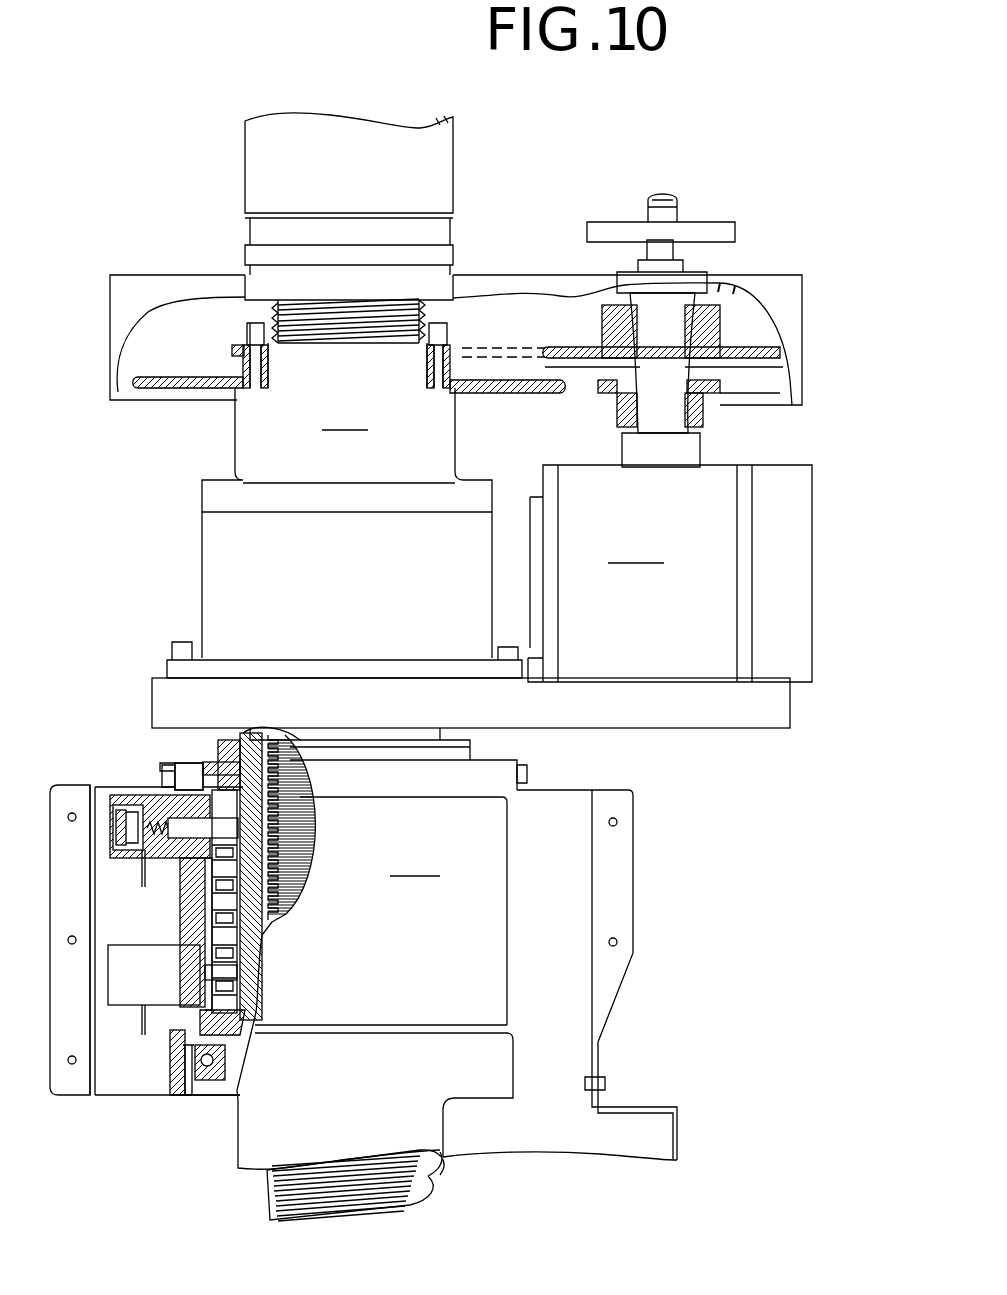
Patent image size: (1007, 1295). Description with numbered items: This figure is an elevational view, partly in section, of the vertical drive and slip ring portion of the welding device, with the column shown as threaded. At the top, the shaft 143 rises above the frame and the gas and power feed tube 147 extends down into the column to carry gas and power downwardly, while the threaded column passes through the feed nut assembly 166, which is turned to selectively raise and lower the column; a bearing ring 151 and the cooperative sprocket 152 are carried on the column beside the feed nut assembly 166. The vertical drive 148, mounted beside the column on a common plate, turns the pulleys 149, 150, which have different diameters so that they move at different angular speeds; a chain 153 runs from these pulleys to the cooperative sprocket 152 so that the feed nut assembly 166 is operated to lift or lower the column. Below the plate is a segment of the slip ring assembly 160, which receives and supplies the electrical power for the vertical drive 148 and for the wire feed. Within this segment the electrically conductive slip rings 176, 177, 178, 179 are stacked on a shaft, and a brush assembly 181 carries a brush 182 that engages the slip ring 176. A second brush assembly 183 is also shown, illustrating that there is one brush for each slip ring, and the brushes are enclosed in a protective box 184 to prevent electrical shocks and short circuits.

The drive shaft 143 is at (458, 157).
The gas and power feed tube 147 is at (420, 320).
The vertical drive 148 is at (670, 573).
The pulley 149 is at (724, 395).
The pulley 150 is at (574, 347).
The bearing ring 151 is at (235, 350).
The cooperative sprocket 152 is at (192, 377).
The chain 153 is at (582, 390).
The slip ring assembly 160 is at (457, 974).
The feed nut assembly 166 is at (344, 510).
The slip ring 176 is at (290, 831).
The slip ring 177 is at (215, 880).
The slip ring 178 is at (220, 927).
The slip ring 179 is at (228, 975).
The brush assembly 181 is at (125, 795).
The brush 182 is at (180, 822).
The second brush assembly 183 is at (162, 1000).
The protective box 184 is at (64, 786).